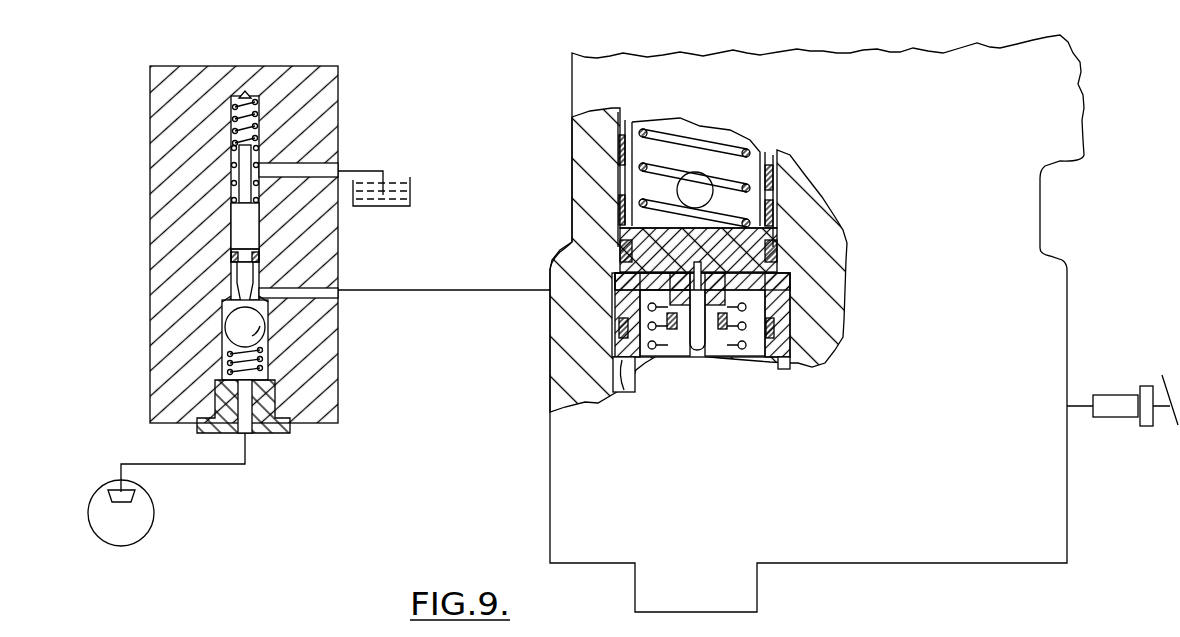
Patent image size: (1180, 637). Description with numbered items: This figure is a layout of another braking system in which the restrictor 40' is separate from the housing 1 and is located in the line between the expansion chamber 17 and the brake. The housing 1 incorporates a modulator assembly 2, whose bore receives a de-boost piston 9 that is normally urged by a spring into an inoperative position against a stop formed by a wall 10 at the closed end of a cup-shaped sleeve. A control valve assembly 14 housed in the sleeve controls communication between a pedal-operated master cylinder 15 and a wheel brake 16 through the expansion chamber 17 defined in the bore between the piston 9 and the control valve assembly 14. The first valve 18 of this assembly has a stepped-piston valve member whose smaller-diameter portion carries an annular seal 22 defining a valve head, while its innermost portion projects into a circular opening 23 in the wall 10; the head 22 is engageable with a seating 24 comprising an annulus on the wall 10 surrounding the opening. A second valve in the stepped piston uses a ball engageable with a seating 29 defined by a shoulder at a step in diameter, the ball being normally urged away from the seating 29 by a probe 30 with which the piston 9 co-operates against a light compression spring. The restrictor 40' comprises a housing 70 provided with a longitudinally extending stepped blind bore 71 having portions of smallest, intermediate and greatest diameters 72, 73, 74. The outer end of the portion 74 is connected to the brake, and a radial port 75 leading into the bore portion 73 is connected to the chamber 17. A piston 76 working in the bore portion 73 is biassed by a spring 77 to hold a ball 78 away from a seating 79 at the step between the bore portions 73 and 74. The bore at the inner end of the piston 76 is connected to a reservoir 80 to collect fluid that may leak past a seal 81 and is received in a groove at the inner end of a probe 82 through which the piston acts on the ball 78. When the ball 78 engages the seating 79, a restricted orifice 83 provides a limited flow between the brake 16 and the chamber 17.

The housing 1 is at (985, 235).
The modulator assembly 2 is at (616, 247).
The de-boost piston 9 is at (622, 135).
The wall 10 is at (618, 250).
The control valve assembly 14 is at (650, 342).
The pedal-operated master cylinder 15 is at (1130, 402).
The wheel brake 16 is at (136, 512).
The expansion chamber 17 is at (625, 283).
The first valve 18 is at (660, 306).
The annular seal 22 is at (778, 318).
The circular opening 23 is at (768, 240).
The seating 24 is at (620, 330).
The seating 29 is at (770, 350).
The probe 30 is at (706, 292).
The restrictor 40' is at (117, 207).
The housing 70 is at (175, 358).
The stepped blind bore 71 is at (232, 252).
The bore portion of smallest diameter 72 is at (246, 95).
The bore portion of intermediate diameter 73 is at (238, 301).
The bore portion of greatest diameter 74 is at (276, 374).
The radial port 75 is at (320, 293).
The piston 76 is at (252, 231).
The spring 77 is at (231, 118).
The ball 78 is at (228, 388).
The seating 79 is at (226, 310).
The reservoir 80 is at (397, 203).
The seal 81 is at (260, 255).
The probe 82 is at (242, 277).
The restricted orifice 83 is at (266, 312).